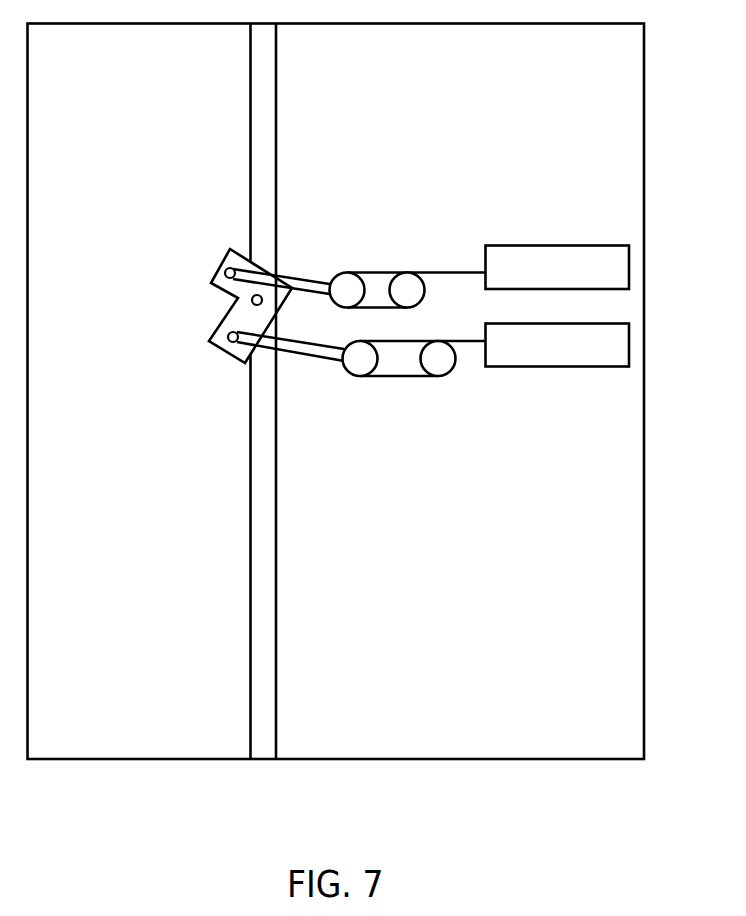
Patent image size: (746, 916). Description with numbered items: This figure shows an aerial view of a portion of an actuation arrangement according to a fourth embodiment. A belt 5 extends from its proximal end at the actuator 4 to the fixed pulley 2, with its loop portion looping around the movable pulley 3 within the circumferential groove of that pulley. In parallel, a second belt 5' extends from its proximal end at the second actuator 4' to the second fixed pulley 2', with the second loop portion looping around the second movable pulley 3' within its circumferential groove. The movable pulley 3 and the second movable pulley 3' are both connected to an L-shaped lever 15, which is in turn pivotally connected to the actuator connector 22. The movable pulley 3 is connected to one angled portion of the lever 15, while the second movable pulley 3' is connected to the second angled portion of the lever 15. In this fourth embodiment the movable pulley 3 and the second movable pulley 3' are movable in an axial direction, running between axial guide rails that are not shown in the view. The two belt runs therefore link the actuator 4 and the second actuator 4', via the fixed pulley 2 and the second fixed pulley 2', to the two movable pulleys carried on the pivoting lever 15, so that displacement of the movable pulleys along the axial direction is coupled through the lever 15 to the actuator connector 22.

The actuator connector 22 is at (263, 50).
The L-shaped lever 15 is at (240, 317).
The movable pulley 3 is at (340, 262).
The fixed pulley 2 is at (405, 259).
The belt 5 is at (416, 262).
The actuator 4 is at (586, 256).
The second movable pulley 3' is at (353, 385).
The second fixed pulley 2' is at (437, 387).
The second belt 5' is at (422, 382).
The second actuator 4' is at (592, 339).